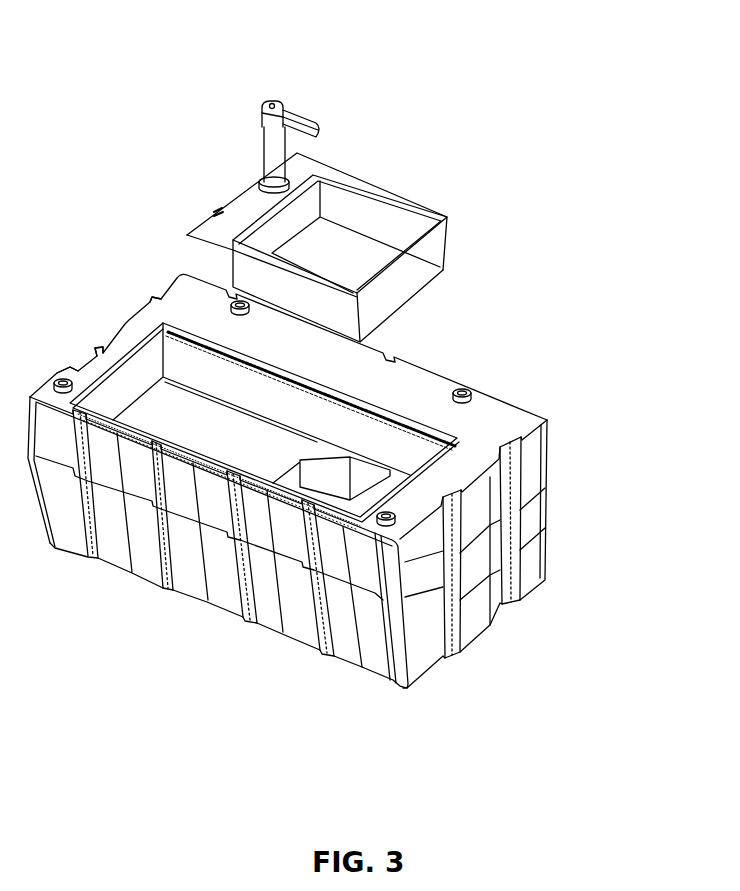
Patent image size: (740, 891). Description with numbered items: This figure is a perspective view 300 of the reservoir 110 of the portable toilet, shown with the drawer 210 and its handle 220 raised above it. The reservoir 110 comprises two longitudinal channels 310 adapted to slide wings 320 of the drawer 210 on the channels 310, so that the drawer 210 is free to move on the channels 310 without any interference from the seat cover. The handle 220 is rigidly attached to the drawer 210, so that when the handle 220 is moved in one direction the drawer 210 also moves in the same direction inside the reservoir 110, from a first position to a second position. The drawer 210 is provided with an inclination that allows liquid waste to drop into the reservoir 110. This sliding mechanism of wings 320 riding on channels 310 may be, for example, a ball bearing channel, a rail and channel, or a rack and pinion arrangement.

The perspective view 300 is at (97, 93).
The reservoir 110 is at (502, 546).
The drawer 210 is at (412, 277).
The handle 220 is at (320, 135).
The longitudinal channels 310 is at (153, 302).
The wings 320 is at (418, 208).